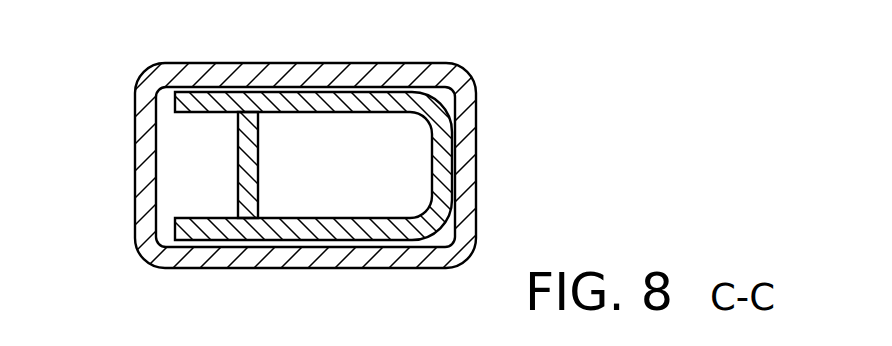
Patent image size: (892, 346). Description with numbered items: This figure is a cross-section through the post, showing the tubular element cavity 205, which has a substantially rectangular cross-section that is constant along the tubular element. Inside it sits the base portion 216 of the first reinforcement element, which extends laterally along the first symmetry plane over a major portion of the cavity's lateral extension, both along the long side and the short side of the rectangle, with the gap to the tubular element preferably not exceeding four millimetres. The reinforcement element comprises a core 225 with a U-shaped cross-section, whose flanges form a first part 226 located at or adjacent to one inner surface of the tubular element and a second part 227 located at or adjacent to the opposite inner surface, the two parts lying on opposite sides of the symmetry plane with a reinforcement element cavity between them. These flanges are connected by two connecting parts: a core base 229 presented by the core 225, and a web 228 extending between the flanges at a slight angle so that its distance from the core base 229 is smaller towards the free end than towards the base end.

The tubular element cavity 205 is at (202, 153).
The base portion 216 is at (362, 168).
The core 225 is at (298, 116).
The first part 226 is at (365, 116).
The second part 227 is at (366, 213).
The web 228 is at (238, 180).
The core base 229 is at (428, 161).